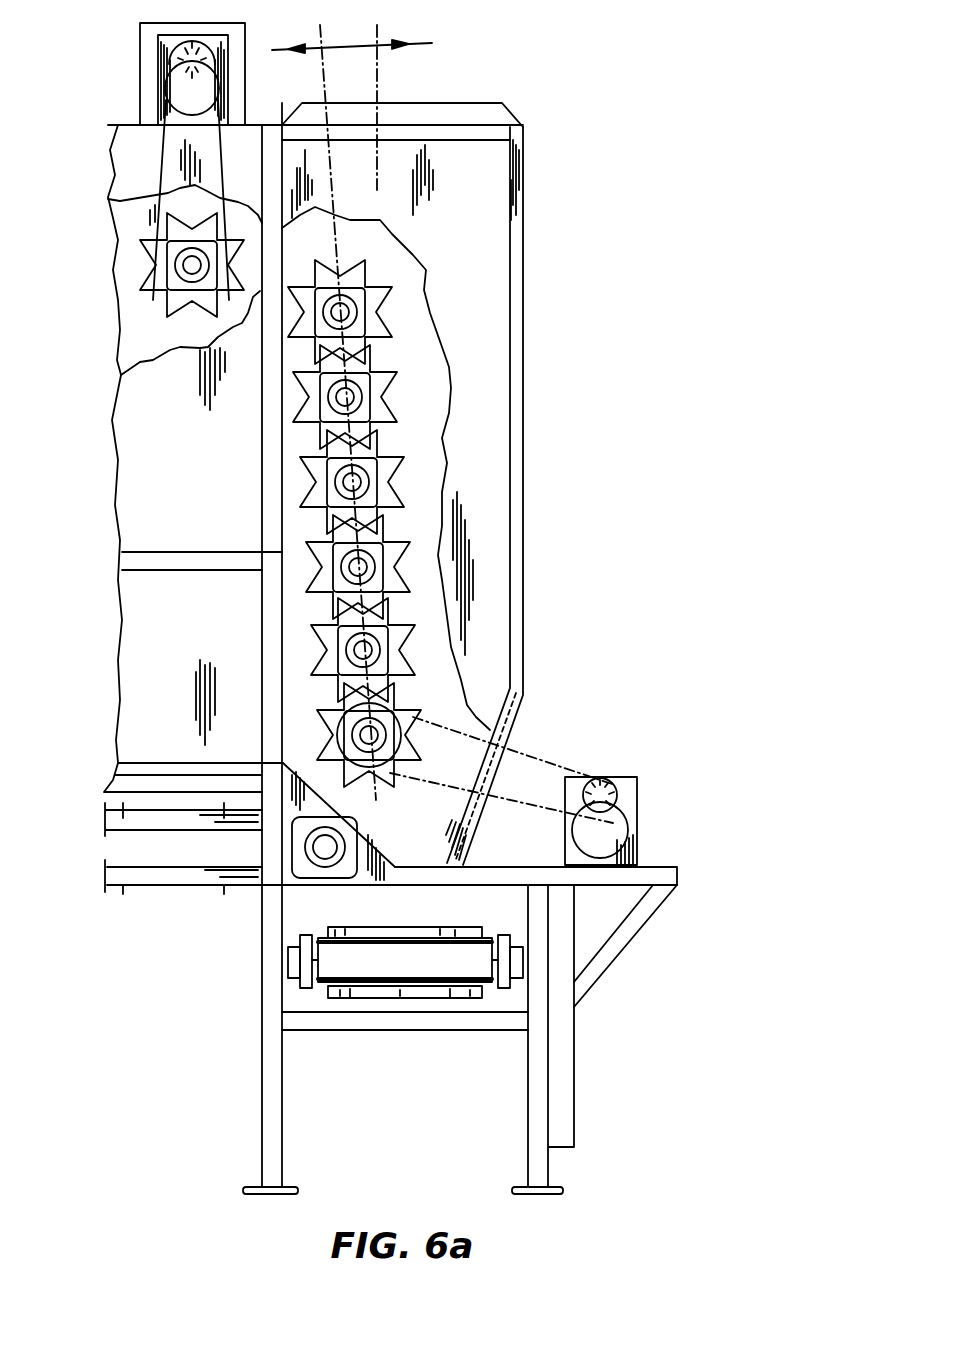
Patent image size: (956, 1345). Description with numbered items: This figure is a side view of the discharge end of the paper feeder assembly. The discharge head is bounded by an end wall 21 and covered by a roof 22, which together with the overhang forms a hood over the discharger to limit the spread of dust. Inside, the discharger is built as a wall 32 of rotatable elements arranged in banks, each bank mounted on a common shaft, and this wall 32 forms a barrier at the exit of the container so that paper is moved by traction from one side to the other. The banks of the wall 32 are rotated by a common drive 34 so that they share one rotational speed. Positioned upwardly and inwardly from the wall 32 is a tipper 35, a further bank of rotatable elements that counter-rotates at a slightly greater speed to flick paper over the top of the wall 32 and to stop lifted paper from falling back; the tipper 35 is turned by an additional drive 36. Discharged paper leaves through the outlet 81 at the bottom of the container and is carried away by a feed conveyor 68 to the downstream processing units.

The end wall 21 is at (507, 247).
The roof 22 is at (428, 127).
The wall 32 is at (422, 393).
The common drive 34 is at (630, 792).
The tipper 35 is at (150, 312).
The additional drive 36 is at (172, 52).
The feed conveyor 68 is at (347, 927).
The discharge outlet 81 is at (417, 852).